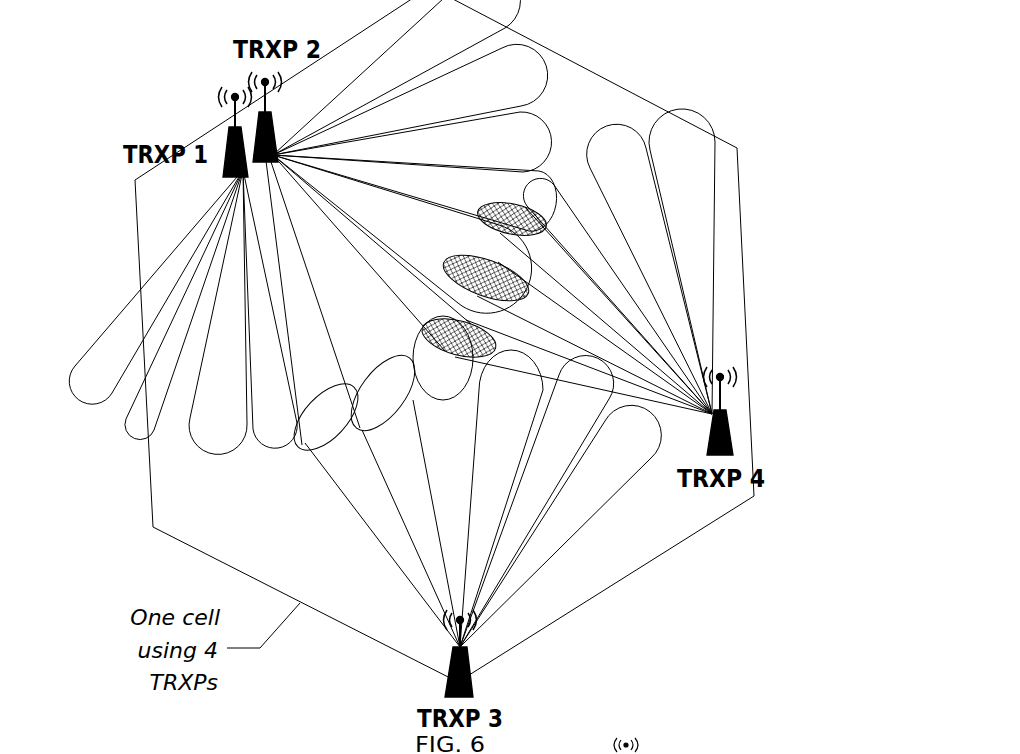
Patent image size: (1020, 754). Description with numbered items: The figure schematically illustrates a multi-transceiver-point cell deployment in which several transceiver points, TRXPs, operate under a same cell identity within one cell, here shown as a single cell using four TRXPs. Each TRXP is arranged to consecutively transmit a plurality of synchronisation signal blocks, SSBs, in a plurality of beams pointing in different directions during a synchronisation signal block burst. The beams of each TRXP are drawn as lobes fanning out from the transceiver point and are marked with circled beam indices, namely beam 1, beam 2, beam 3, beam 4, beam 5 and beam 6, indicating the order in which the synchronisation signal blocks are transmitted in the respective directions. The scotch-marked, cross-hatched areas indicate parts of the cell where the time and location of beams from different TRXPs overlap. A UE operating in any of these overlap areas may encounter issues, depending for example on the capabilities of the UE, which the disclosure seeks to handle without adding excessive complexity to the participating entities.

The beam 1 is at (390, 401).
The beam 2 is at (418, 401).
The beam 3 is at (450, 401).
The beam 4 is at (477, 379).
The beam 5 is at (488, 345).
The beam 6 is at (494, 323).